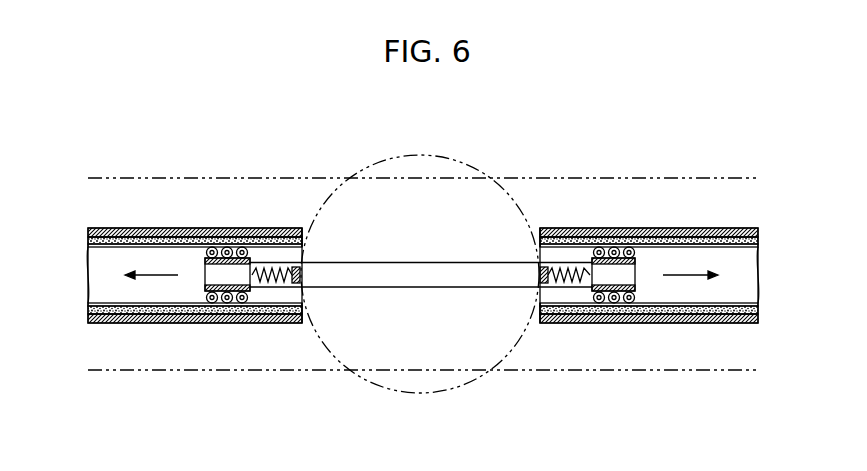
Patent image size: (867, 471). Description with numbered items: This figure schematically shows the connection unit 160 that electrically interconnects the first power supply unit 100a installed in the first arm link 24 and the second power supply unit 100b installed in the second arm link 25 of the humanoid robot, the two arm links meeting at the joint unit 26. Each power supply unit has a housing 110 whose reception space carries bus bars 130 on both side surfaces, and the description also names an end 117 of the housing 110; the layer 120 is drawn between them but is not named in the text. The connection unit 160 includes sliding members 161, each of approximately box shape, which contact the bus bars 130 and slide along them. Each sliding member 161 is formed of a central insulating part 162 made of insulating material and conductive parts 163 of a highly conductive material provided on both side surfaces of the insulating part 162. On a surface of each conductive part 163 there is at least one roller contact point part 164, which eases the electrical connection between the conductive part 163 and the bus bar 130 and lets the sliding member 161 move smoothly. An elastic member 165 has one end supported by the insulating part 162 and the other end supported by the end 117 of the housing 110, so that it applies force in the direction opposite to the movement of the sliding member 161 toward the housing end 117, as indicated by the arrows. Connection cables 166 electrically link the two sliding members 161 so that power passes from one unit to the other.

The first arm link 24 is at (731, 372).
The second arm link 25 is at (115, 372).
The joint unit 26 is at (426, 393).
The first power supply unit 100a is at (736, 332).
The second power supply unit 100b is at (118, 331).
The housing 110 is at (110, 228).
The end of the housing 117 is at (298, 323).
The intermediate layer 120 is at (91, 237).
The bus bar 130 is at (90, 245).
The connection unit 160 is at (419, 268).
The sliding member 161 is at (450, 205).
The insulating part 162 is at (620, 272).
The conductive part 163 is at (606, 247).
The roller contact point part 164 is at (592, 258).
The elastic member 165 is at (272, 284).
The connection cable 166 is at (416, 262).